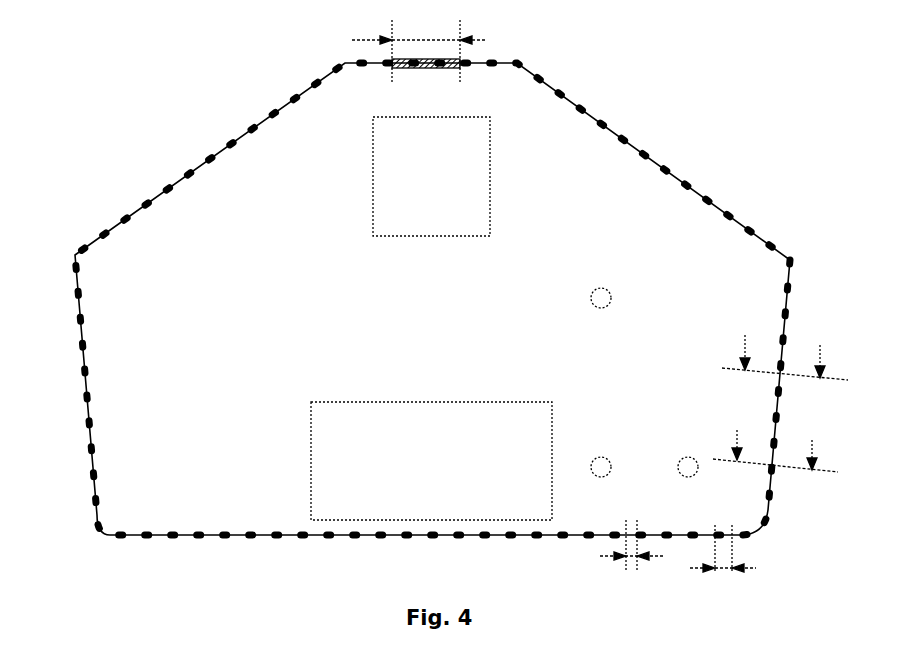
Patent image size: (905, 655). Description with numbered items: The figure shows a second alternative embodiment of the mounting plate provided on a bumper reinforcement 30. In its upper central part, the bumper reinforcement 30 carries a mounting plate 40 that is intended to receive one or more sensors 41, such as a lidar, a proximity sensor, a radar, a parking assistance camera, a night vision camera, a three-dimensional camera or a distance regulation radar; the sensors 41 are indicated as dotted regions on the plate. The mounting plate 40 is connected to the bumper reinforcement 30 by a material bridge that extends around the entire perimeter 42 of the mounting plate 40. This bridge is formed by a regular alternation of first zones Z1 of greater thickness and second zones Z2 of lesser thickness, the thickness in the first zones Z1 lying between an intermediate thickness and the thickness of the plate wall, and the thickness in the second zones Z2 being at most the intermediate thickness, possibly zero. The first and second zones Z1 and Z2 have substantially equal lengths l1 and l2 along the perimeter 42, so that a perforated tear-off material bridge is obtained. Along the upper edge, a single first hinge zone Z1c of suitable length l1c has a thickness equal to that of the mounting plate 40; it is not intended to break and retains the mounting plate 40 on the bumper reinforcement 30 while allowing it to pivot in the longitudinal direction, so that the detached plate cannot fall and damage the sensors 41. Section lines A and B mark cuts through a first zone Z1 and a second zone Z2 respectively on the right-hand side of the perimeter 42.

The bumper reinforcement 30 is at (47, 183).
The mounting plate 40 is at (340, 301).
The sensors 41 is at (438, 214).
The perimeter of the mounting plate 42 is at (85, 363).
The first zone Z1 is at (663, 163).
The second zone Z2 is at (562, 92).
The first hinge zone Z1c is at (430, 70).
The length of the first hinge zone l1c is at (418, 46).
The length of the first zone l1 is at (732, 555).
The length of the second zone l2 is at (625, 554).
The section A- A is at (776, 446).
The section B- B is at (784, 353).